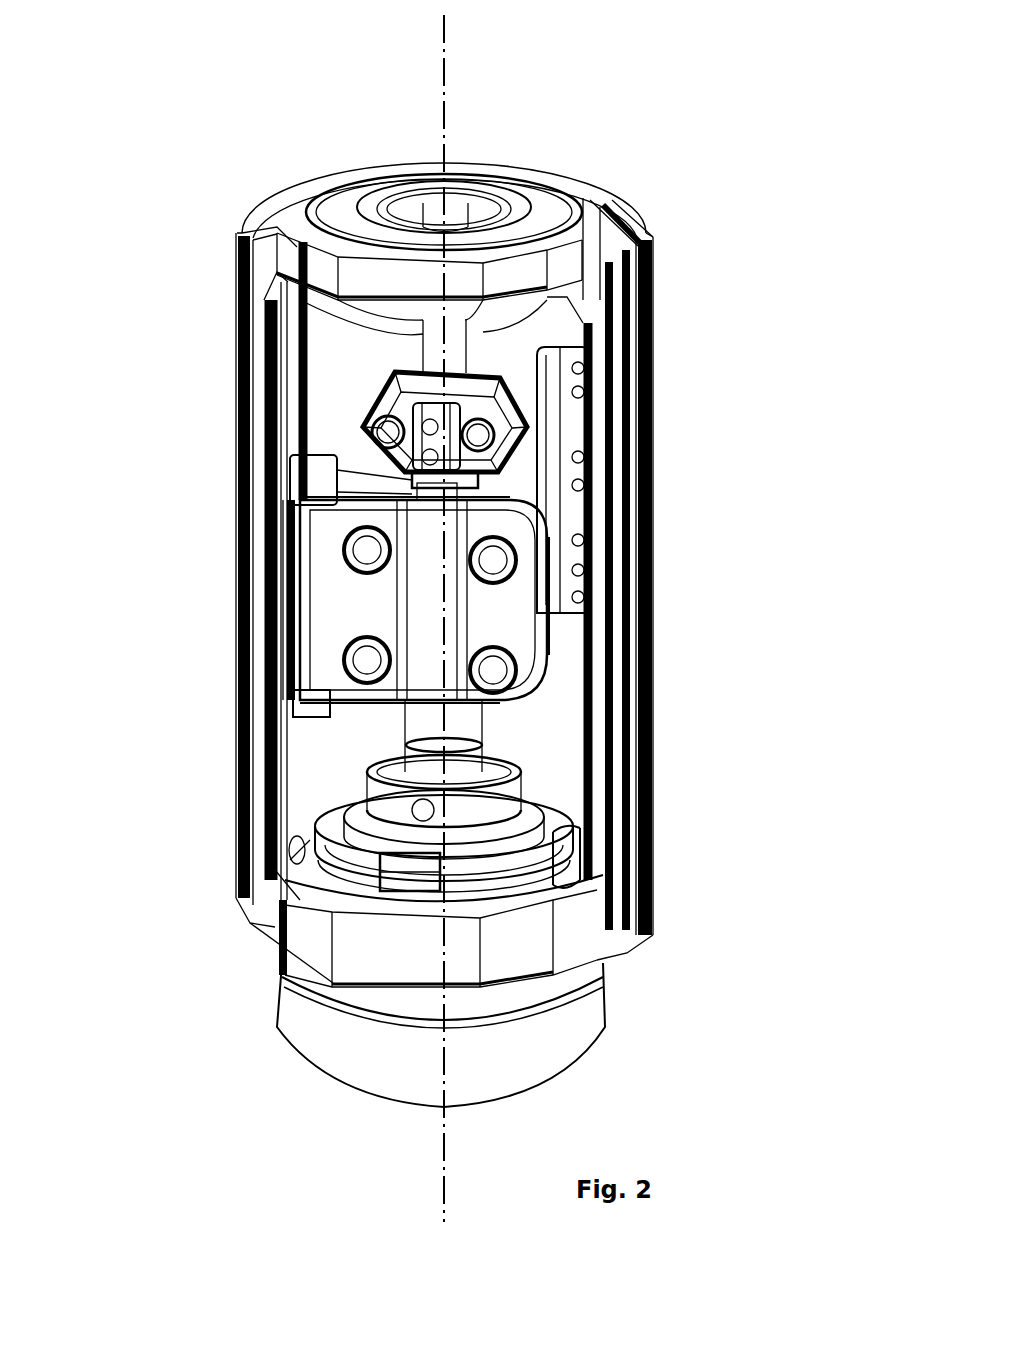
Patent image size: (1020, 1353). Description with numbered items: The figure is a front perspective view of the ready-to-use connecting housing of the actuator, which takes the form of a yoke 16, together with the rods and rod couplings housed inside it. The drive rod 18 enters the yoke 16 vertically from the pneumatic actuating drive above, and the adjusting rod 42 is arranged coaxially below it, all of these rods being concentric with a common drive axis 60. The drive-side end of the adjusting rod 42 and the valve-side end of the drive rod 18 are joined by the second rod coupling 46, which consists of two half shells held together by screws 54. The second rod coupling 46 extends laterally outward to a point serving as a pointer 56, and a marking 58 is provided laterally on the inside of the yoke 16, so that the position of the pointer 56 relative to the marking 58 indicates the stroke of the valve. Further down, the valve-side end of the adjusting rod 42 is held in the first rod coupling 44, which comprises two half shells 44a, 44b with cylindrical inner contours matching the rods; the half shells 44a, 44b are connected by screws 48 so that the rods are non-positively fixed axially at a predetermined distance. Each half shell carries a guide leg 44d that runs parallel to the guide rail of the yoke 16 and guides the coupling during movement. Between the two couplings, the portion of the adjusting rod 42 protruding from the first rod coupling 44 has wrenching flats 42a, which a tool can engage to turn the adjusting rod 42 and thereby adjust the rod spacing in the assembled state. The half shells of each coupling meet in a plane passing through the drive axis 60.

The yoke 16 is at (242, 252).
The drive rod 18 is at (455, 208).
The adjusting rod 42 is at (455, 492).
The wrenching flats 42a is at (413, 485).
The first rod coupling 44 is at (437, 655).
The half shell 44a is at (530, 702).
The half shell 44b is at (533, 553).
The guide leg 44d is at (300, 497).
The second rod coupling 46 is at (415, 400).
The screws 48 is at (365, 663).
The screws 54 is at (482, 440).
The pointer 56 is at (545, 410).
The marking 58 is at (550, 442).
The drive axis 60 is at (447, 38).